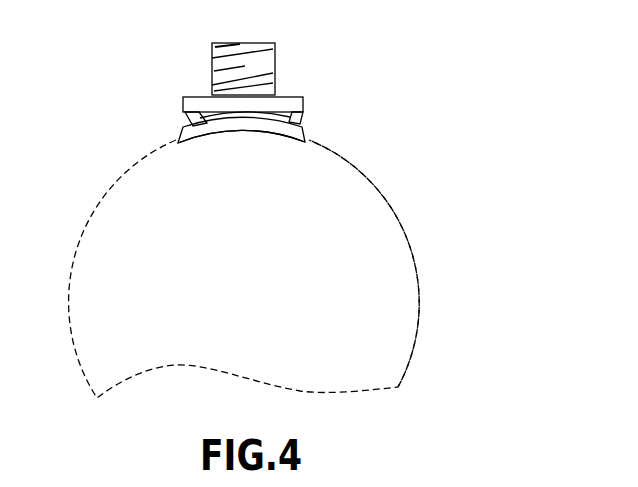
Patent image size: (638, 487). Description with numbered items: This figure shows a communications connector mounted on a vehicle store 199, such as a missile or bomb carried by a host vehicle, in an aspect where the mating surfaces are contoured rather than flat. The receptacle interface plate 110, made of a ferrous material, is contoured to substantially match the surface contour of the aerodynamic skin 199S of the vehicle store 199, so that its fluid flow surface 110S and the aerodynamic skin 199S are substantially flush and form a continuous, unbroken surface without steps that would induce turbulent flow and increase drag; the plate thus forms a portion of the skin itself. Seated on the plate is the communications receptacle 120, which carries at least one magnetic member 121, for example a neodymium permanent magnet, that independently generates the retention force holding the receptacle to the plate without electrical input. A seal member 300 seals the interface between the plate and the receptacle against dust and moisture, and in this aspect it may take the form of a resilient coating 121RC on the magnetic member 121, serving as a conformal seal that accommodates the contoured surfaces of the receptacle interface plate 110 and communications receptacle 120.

The communications receptacle 120 is at (275, 65).
The magnetic member 121 is at (183, 111).
The resilient coating 121RC is at (296, 119).
The seal member 300 is at (205, 123).
The receptacle interface plate 110 is at (308, 136).
The fluid flow surface 110S is at (178, 129).
The vehicle store 199 is at (267, 265).
The aerodynamic skin 199S is at (413, 247).